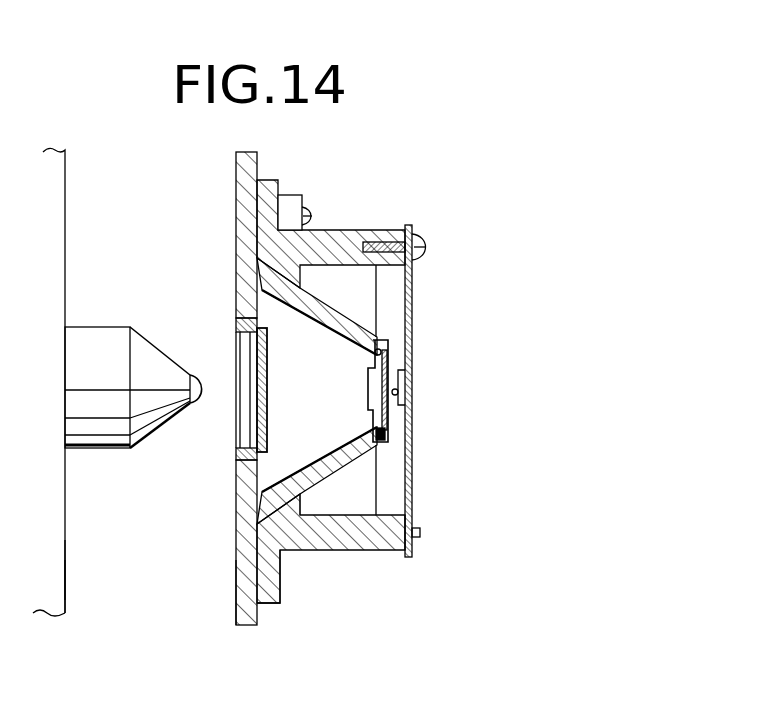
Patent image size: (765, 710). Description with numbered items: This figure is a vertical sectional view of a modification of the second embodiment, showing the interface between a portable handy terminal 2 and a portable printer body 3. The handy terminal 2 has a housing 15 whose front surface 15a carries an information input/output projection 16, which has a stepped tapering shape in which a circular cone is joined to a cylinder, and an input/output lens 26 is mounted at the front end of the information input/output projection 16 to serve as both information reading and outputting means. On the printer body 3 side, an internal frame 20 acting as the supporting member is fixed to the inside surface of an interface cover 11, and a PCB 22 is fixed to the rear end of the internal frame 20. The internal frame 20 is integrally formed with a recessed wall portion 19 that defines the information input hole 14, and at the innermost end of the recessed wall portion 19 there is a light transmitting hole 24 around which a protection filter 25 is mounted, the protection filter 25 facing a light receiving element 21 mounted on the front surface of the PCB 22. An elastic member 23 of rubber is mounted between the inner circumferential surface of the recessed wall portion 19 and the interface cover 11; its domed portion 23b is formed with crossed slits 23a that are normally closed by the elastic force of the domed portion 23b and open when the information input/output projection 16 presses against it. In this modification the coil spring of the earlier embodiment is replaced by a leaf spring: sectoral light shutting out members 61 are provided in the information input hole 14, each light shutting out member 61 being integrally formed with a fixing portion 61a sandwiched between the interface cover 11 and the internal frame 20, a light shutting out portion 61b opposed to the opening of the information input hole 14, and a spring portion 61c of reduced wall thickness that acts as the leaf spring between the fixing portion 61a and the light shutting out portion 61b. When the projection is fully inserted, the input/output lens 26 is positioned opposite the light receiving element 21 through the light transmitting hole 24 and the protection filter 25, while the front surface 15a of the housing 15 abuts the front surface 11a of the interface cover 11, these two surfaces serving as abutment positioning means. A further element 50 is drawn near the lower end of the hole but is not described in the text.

The handy terminal 2 is at (48, 193).
The printer body 3 is at (236, 170).
The interface cover 11 is at (258, 608).
The front surface of interface cover 11a is at (236, 583).
The information input hole 14 is at (248, 417).
The housing 15 is at (69, 598).
The front surface of housing 15a is at (70, 565).
The information input/output projection 16 is at (110, 425).
The recessed wall portion 19 is at (326, 320).
The internal frame 20 is at (258, 180).
The light receiving element 21 is at (398, 392).
The PCB 22 is at (412, 283).
The elastic member 23 is at (277, 500).
The crossed slits 23a is at (363, 445).
The domed portion 23b is at (330, 450).
The light transmitting hole 24 is at (388, 373).
The protection filter 25 is at (389, 417).
The input/output lens 26 is at (199, 376).
The lower pad 50 is at (238, 456).
The light shutting out member 61 is at (268, 408).
The fixing portion 61a is at (257, 316).
The light shutting out portion 61b is at (242, 345).
The spring portion 61c is at (249, 332).